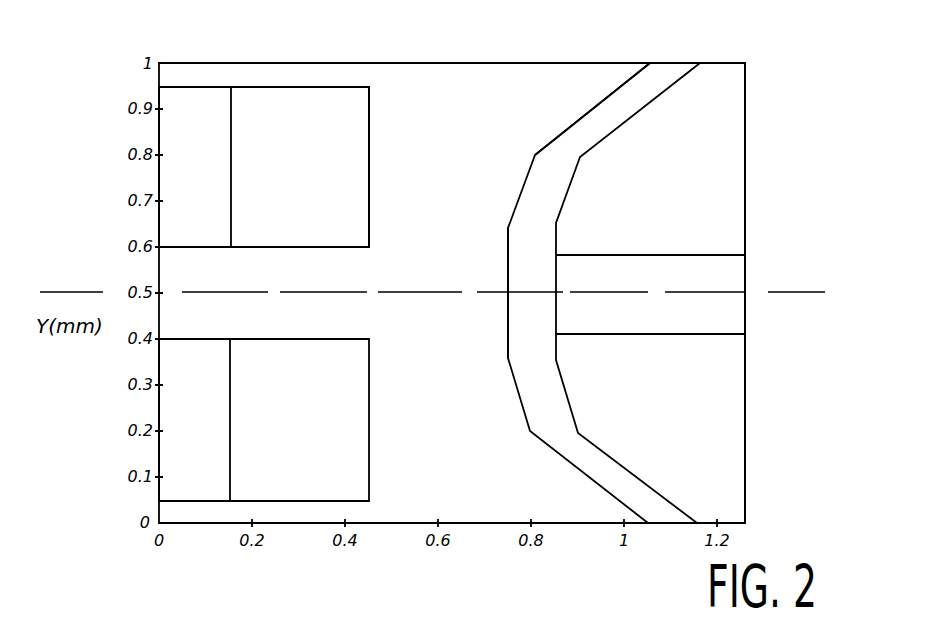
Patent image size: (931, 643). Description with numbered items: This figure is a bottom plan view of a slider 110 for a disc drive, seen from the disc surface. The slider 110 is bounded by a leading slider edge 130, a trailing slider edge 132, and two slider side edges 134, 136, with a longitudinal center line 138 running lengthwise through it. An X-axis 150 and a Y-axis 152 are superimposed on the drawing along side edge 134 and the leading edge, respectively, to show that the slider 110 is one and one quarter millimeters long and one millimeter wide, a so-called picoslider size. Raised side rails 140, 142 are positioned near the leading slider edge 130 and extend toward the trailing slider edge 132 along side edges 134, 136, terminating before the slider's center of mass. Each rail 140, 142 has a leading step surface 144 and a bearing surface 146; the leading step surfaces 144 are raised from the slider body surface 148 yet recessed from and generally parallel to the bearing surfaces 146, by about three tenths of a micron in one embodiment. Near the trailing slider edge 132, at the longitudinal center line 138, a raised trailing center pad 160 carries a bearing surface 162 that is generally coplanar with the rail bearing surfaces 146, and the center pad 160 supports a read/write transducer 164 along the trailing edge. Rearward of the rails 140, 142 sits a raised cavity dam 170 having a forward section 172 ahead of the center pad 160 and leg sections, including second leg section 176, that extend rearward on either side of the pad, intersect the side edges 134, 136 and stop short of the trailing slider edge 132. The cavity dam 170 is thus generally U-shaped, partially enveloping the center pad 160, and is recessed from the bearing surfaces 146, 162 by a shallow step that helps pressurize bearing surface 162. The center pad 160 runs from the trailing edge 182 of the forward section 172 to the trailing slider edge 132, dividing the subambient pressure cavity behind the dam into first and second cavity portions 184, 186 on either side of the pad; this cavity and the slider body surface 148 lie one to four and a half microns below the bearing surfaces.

The slider 110 is at (207, 527).
The leading slider edge 130 is at (158, 506).
The trailing slider edge 132 is at (747, 503).
The slider side edge 134 is at (680, 528).
The slider side edge 136 is at (672, 63).
The longitudinal center line 138 is at (62, 290).
The raised side rail 140 is at (460, 291).
The raised side rail 142 is at (268, 88).
The leading step surface 144 is at (178, 128).
The bearing surface 146 is at (343, 141).
The slider body surface 148 is at (350, 278).
The X-axis 150 is at (492, 528).
The Y-axis 152 is at (158, 315).
The raised trailing center pad 160 is at (746, 273).
The bearing surface 162 is at (673, 318).
The read/write transducer 164 is at (746, 294).
The raised cavity dam 170 is at (508, 312).
The forward section 172 is at (507, 243).
The second leg section 176 is at (588, 112).
The trailing edge of forward section 182 is at (557, 241).
The first cavity portion 184 is at (707, 184).
The second cavity portion 186 is at (694, 450).